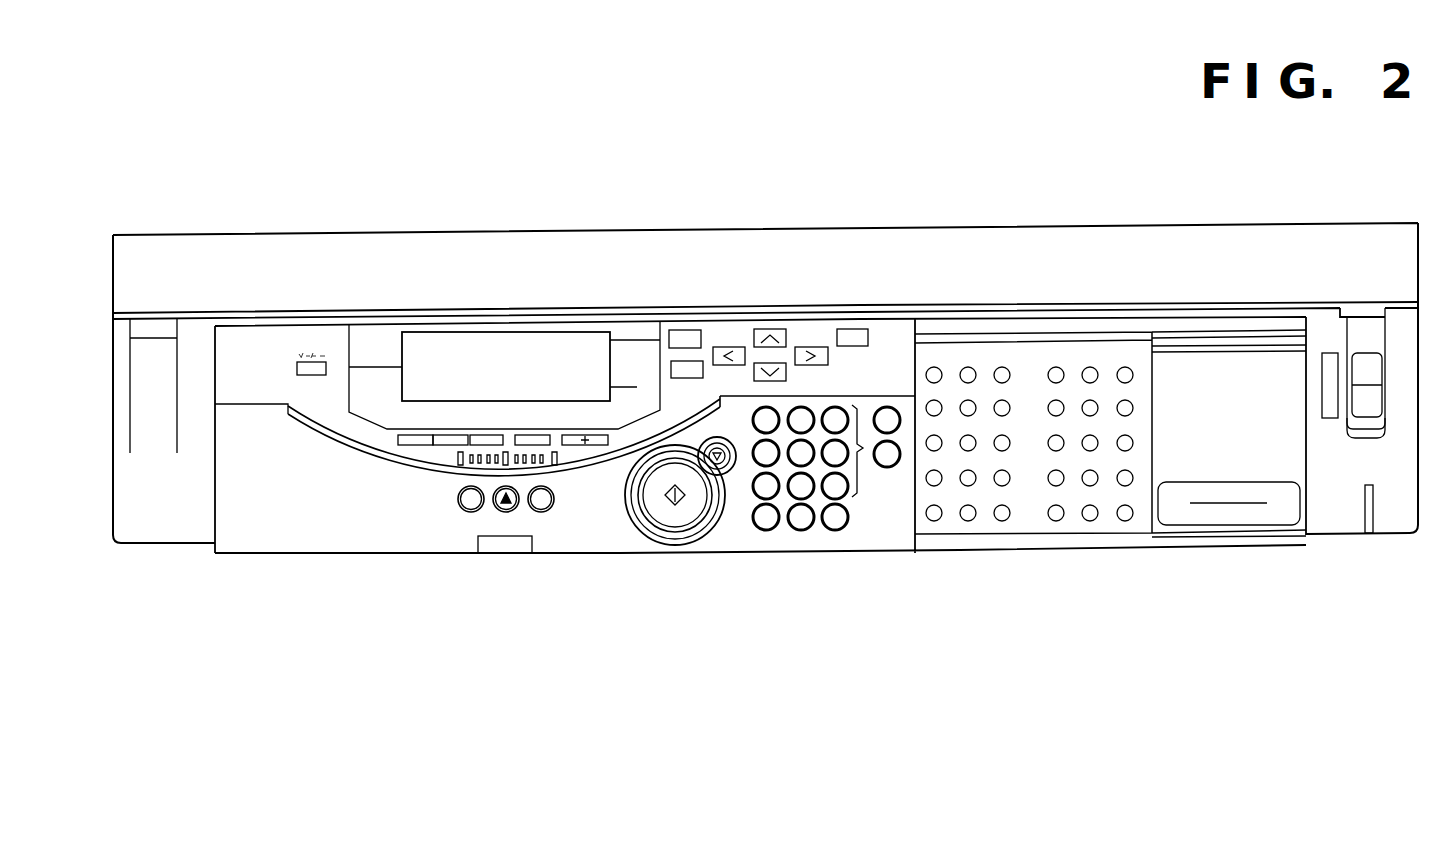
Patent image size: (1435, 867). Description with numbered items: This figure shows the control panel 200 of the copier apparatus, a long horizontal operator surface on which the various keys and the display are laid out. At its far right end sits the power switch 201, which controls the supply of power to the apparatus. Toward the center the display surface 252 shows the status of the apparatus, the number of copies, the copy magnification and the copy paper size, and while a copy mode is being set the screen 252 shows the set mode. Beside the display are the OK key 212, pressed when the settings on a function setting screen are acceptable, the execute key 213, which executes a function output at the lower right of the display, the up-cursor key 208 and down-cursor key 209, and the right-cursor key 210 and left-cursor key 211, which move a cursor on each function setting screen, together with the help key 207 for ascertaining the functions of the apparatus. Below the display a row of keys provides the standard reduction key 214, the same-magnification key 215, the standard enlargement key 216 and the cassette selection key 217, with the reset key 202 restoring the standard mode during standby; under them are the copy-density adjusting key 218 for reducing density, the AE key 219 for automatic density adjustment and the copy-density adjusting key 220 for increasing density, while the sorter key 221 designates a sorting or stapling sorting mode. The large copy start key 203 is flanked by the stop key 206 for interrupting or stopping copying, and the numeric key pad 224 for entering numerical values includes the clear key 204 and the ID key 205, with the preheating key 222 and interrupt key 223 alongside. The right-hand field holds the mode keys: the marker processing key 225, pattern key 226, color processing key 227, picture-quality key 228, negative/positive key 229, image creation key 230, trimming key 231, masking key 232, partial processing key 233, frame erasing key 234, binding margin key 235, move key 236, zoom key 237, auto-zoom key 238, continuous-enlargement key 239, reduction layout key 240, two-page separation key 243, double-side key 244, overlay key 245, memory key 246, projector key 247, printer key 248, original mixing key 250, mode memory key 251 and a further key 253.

The operation panel 200 is at (1165, 225).
The power switch 201 is at (1362, 393).
The reset key 202 is at (598, 446).
The copy start key 203 is at (678, 527).
The clear key 204 is at (764, 529).
The ID key 205 is at (835, 529).
The stop key 206 is at (725, 473).
The help key 207 is at (863, 329).
The up-cursor key 208 is at (764, 329).
The down-cursor key 209 is at (785, 363).
The right-cursor key 210 is at (818, 347).
The left-cursor key 211 is at (725, 347).
The OK key 212 is at (674, 330).
The execute key 213 is at (668, 363).
The standard reduction key 214 is at (400, 447).
The 1:1 key 215 is at (448, 446).
The standard enlargement key 216 is at (480, 444).
The cassette selection key 217 is at (547, 446).
The copy-density adjusting key 218 is at (471, 513).
The AE key 219 is at (506, 513).
The copy-density adjusting key 220 is at (541, 513).
The sorter key 221 is at (324, 361).
The preheating key 222 is at (893, 406).
The interrupt key 223 is at (889, 468).
The numeric key pad 224 is at (829, 526).
The marker processing key 225 is at (934, 366).
The pattern key 226 is at (968, 366).
The color processing key 227 is at (1002, 366).
The picture-quality key 228 is at (1056, 366).
The negative/positive key 229 is at (1090, 366).
The image creation key 230 is at (1125, 366).
The trimming key 231 is at (934, 399).
The masking key 232 is at (968, 399).
The partial processing key 233 is at (1002, 399).
The frame erasing key 234 is at (1056, 399).
The binding margin key 235 is at (1090, 399).
The move key 236 is at (1125, 399).
The zoom key 237 is at (934, 434).
The auto-zoom key 238 is at (968, 434).
The continuous-enlargement key 239 is at (1002, 434).
The reduction layout key 240 is at (1056, 434).
The two-page separation key 243 is at (934, 469).
The double-side key 244 is at (968, 469).
The overlay key 245 is at (1002, 469).
The memory key 246 is at (1056, 469).
The projector key 247 is at (1090, 469).
The printer key 248 is at (1125, 469).
The original mixing key 250 is at (968, 504).
The mode memory key 251 is at (1002, 504).
The display surface 252 is at (490, 332).
The mode key 253 is at (1056, 504).